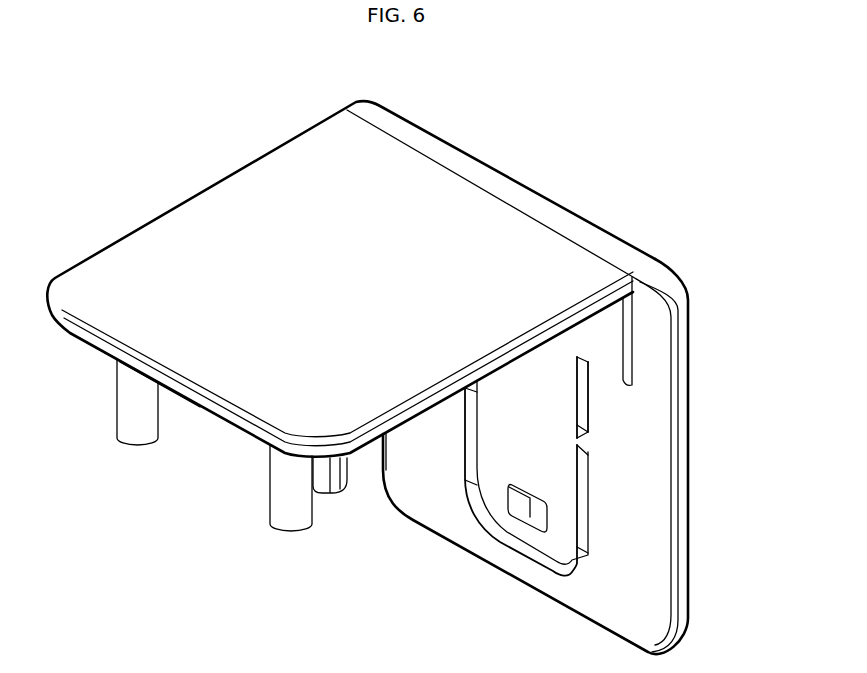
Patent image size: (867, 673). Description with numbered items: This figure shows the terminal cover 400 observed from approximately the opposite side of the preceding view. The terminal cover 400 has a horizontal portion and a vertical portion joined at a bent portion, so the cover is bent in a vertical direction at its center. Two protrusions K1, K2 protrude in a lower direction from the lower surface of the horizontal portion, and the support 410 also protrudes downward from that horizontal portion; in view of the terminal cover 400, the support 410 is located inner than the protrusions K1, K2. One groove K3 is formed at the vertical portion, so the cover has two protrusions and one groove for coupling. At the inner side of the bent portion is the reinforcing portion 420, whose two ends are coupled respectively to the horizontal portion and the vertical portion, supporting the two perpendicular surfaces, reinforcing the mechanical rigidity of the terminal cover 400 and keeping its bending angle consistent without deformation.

The terminal cover 400 is at (400, 371).
The support 410 is at (205, 413).
The reinforcing portion 420 is at (610, 343).
The protrusion K1 is at (287, 505).
The protrusion K2 is at (130, 413).
The groove K3 is at (524, 511).